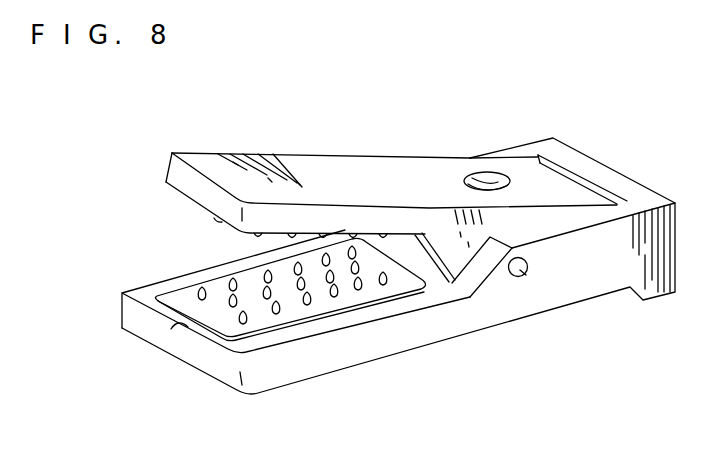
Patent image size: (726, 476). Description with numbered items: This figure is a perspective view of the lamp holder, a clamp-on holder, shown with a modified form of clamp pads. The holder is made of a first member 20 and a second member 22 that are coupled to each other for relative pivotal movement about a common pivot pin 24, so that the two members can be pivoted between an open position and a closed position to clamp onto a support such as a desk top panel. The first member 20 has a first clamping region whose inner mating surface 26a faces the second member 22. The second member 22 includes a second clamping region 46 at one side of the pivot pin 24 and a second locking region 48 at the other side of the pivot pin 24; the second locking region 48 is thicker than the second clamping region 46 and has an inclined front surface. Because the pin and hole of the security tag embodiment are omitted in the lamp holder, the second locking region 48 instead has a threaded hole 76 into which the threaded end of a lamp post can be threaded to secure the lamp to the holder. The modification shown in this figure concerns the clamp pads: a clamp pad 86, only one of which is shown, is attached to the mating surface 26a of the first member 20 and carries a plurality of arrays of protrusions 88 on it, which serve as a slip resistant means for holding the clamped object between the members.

The first member 20 is at (225, 377).
The second member 22 is at (166, 176).
The pivot pin 24 is at (518, 278).
The mating surface 26a is at (175, 327).
The second clamping region 46 is at (340, 178).
The second locking region 48 is at (458, 258).
The threaded hole 76 is at (480, 178).
The clamp pad 86 is at (263, 318).
The protrusions 88 is at (265, 262).